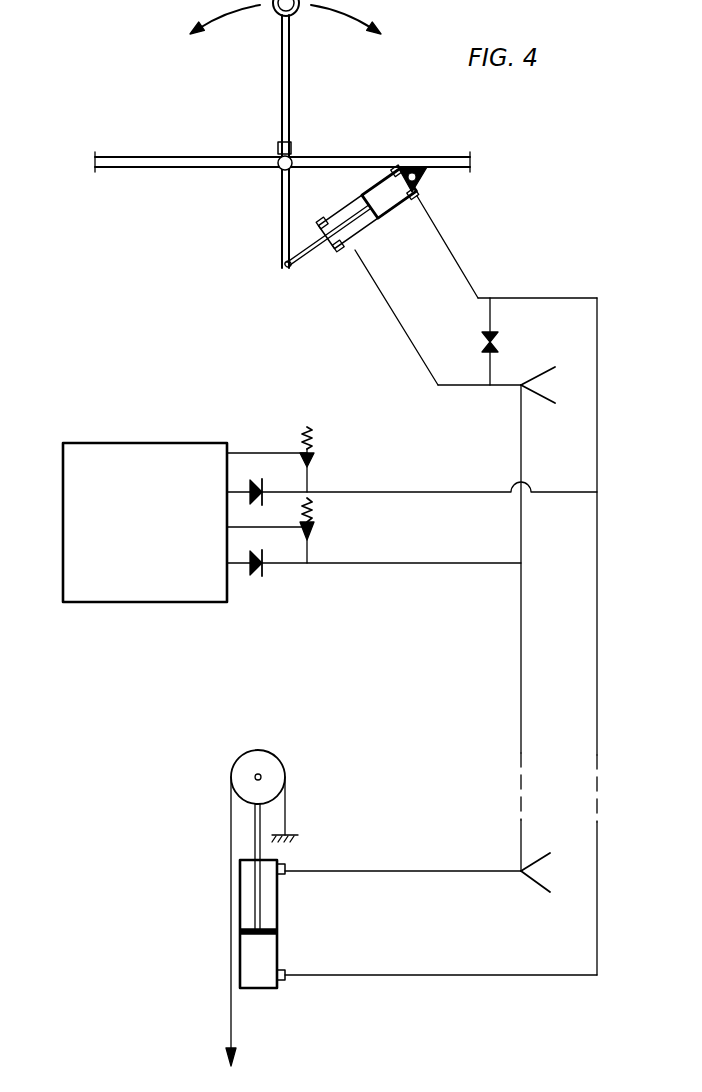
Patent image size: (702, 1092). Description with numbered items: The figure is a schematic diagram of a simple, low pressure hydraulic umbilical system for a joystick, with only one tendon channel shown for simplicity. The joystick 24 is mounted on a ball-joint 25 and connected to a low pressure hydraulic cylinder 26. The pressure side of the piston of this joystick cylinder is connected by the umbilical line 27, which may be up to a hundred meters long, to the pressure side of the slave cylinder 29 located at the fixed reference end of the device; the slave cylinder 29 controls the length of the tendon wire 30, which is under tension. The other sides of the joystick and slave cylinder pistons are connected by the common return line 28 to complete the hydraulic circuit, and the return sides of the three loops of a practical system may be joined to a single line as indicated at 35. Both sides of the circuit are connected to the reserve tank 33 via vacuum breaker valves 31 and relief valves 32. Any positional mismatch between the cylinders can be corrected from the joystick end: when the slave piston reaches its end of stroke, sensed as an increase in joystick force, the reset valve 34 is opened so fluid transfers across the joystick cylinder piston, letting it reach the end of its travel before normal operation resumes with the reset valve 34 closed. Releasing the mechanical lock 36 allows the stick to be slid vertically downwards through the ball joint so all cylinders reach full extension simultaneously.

The joystick 24 is at (281, 83).
The ball-joint 25 is at (281, 169).
The low pressure hydraulic cylinder 26 is at (391, 214).
The umbilical line 27 is at (597, 675).
The common return line 28 is at (520, 695).
The slave cylinder 29 is at (278, 906).
The tendon wire 30 is at (229, 1003).
The vacuum breaker valve 31 is at (251, 575).
The relief valve 32 is at (316, 458).
The reserve tank 33 is at (152, 535).
The reset valve 34 is at (482, 343).
The common return connection 35 is at (520, 872).
The mechanical lock 36 is at (291, 148).